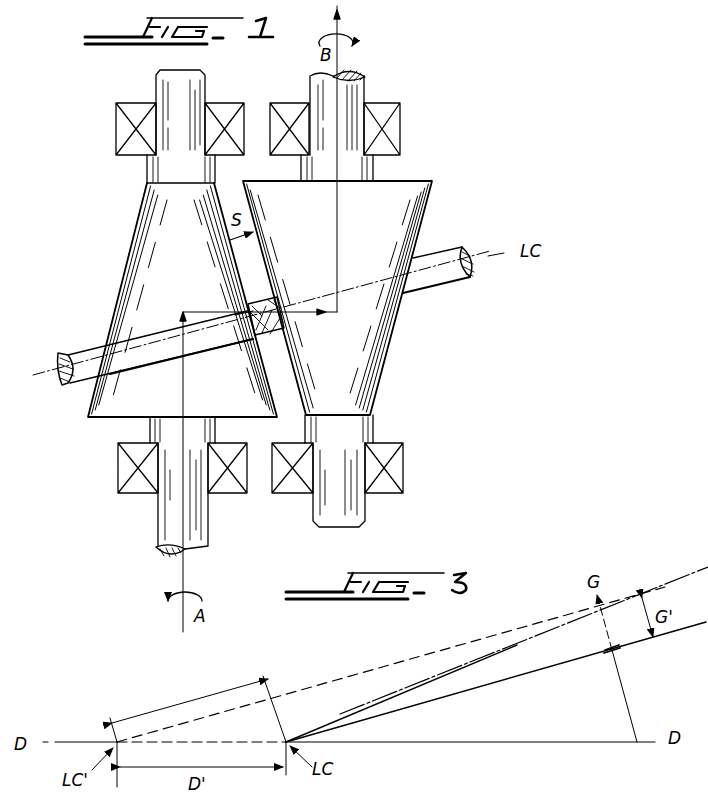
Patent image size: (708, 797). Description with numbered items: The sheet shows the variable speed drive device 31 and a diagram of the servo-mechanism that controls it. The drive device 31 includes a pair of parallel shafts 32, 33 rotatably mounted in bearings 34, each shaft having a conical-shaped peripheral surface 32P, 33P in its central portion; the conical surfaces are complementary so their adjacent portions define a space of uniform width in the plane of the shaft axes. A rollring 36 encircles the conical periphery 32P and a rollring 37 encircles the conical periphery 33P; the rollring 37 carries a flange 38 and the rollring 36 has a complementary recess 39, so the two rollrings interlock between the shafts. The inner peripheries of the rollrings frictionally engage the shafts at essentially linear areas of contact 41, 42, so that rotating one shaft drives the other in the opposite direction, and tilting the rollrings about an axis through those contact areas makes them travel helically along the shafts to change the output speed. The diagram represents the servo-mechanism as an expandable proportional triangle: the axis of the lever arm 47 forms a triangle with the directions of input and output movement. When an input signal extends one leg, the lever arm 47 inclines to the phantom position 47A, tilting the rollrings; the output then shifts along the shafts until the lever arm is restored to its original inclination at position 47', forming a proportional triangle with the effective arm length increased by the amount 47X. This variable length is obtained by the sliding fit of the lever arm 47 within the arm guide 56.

In FIG. 1, the variable speed drive device 31 is at (483, 128).
In FIG. 1, the shaft 32 is at (207, 95).
In FIG. 1, the shaft 33 is at (365, 90).
In FIG. 1, the bearings 34 is at (115, 117).
In FIG. 1, the conical-shaped peripheral surface 32P is at (140, 252).
In FIG. 1, the conical-shaped peripheral surface 33P is at (398, 240).
In FIG. 1, the rollring 36 is at (84, 351).
In FIG. 1, the rollring 37 is at (468, 278).
In FIG. 1, the flange 38 is at (473, 248).
In FIG. 1, the complementary recess 39 is at (65, 381).
In FIG. 1, the area of contact 41 is at (262, 322).
In FIG. 1, the area of contact 42 is at (270, 310).
In FIG. 3, the lever arm 47 is at (496, 682).
In FIG. 3, the phantom line position of lever arm 47A is at (483, 660).
In FIG. 3, the increase in effective lever arm length 47X is at (198, 709).
In FIG. 3, the restored position of lever arm 47' is at (391, 664).
In FIG. 3, the arm guide 56 is at (615, 652).